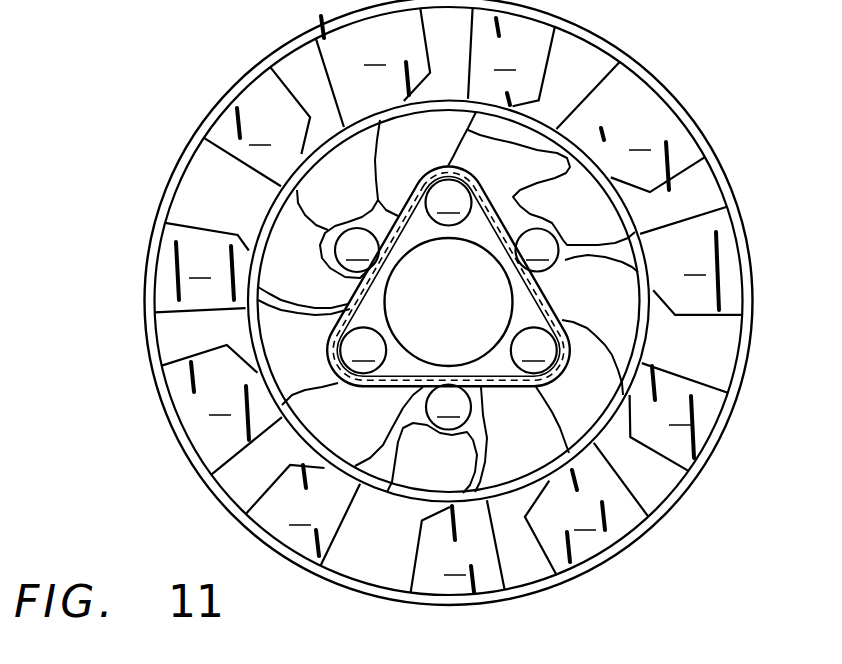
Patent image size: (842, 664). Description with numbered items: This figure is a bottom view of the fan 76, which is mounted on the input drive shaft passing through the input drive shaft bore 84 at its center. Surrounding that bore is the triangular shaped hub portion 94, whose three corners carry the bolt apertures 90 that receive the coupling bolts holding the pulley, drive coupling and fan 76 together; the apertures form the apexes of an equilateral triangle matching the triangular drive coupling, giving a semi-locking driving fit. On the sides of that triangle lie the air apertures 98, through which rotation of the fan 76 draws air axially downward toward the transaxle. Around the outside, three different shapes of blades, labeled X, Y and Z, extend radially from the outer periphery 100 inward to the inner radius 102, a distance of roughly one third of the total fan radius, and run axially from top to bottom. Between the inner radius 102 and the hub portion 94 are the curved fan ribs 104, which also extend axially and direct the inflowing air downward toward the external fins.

The fan 76 is at (748, 109).
The input drive shaft bore 84 is at (462, 307).
The bolt apertures 90 is at (448, 277).
The triangular shaped hub portion 94 is at (523, 307).
The air apertures 98 is at (447, 329).
The outer periphery 100 is at (743, 238).
The inner radius 102 is at (623, 56).
The fan ribs 104 is at (373, 157).